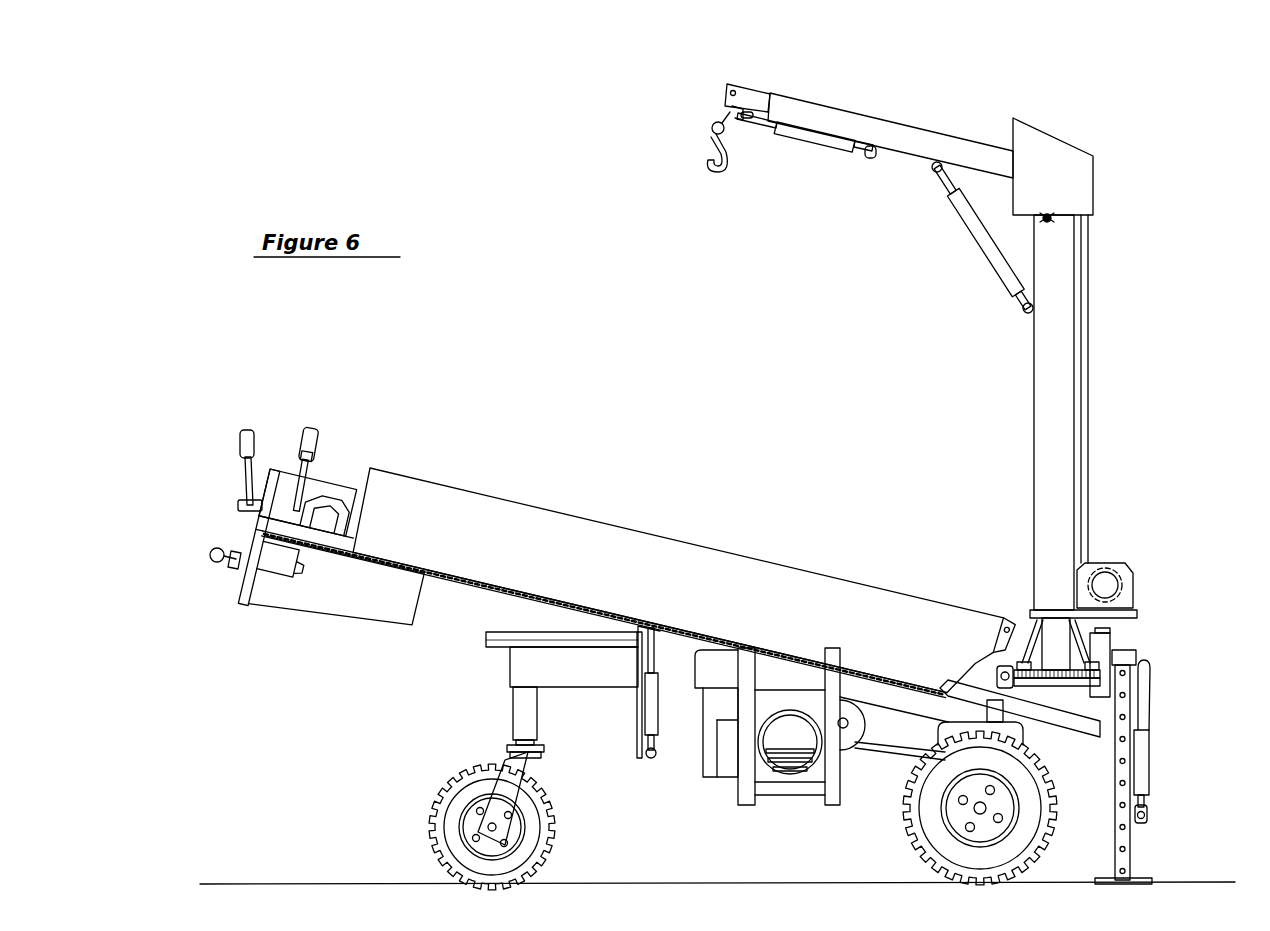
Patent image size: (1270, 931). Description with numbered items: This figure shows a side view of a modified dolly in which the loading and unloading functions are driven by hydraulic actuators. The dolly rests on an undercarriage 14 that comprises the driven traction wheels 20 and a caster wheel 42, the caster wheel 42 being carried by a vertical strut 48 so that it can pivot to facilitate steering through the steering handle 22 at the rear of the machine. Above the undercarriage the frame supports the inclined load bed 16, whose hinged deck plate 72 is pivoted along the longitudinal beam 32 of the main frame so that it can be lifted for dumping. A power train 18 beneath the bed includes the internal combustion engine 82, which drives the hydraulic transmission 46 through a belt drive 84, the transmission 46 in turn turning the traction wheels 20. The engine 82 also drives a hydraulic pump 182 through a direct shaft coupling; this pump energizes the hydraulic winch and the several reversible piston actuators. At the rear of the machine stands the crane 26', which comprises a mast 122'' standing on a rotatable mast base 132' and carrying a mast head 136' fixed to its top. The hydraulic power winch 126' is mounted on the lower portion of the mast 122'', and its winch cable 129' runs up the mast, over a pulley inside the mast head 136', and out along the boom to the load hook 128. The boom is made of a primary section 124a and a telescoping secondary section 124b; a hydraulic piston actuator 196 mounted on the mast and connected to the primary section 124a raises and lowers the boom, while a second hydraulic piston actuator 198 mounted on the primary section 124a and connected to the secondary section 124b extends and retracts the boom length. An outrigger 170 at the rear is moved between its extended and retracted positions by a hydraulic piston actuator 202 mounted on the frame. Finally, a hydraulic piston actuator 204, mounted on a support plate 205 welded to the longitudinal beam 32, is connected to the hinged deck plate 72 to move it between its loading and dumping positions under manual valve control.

The undercarriage 14 is at (468, 748).
The load bed 16 is at (772, 540).
The power train 18 is at (800, 812).
The traction wheels 20 is at (1052, 804).
The steering handle 22 is at (203, 531).
The crane 26' is at (1025, 495).
The longitudinal beam 32 is at (603, 640).
The caster wheel 42 is at (560, 826).
The hydraulic transmission 46 is at (1028, 735).
The vertical strut 48 is at (510, 665).
The hinged deck plate 72 is at (532, 583).
The engine 82 is at (793, 710).
The belt drive 84 is at (870, 757).
The mast 122'' is at (1009, 412).
The primary boom section 124a is at (942, 140).
The secondary boom section 124b is at (893, 122).
The hydraulic power winch 126' is at (1149, 585).
The load hook 128 is at (717, 187).
The winch cable 129' is at (891, 326).
The rotatable mast base 132' is at (1112, 657).
The mast head 136' is at (1053, 145).
The outrigger 170 is at (1133, 852).
The hydraulic pump 182 is at (724, 770).
The boom angle hydraulic piston actuator 196 is at (982, 252).
The boom extender hydraulic piston actuator 198 is at (803, 148).
The outrigger hydraulic piston actuator 202 is at (1152, 760).
The dump hydraulic piston actuator 204 is at (668, 722).
The support plate 205 is at (628, 744).